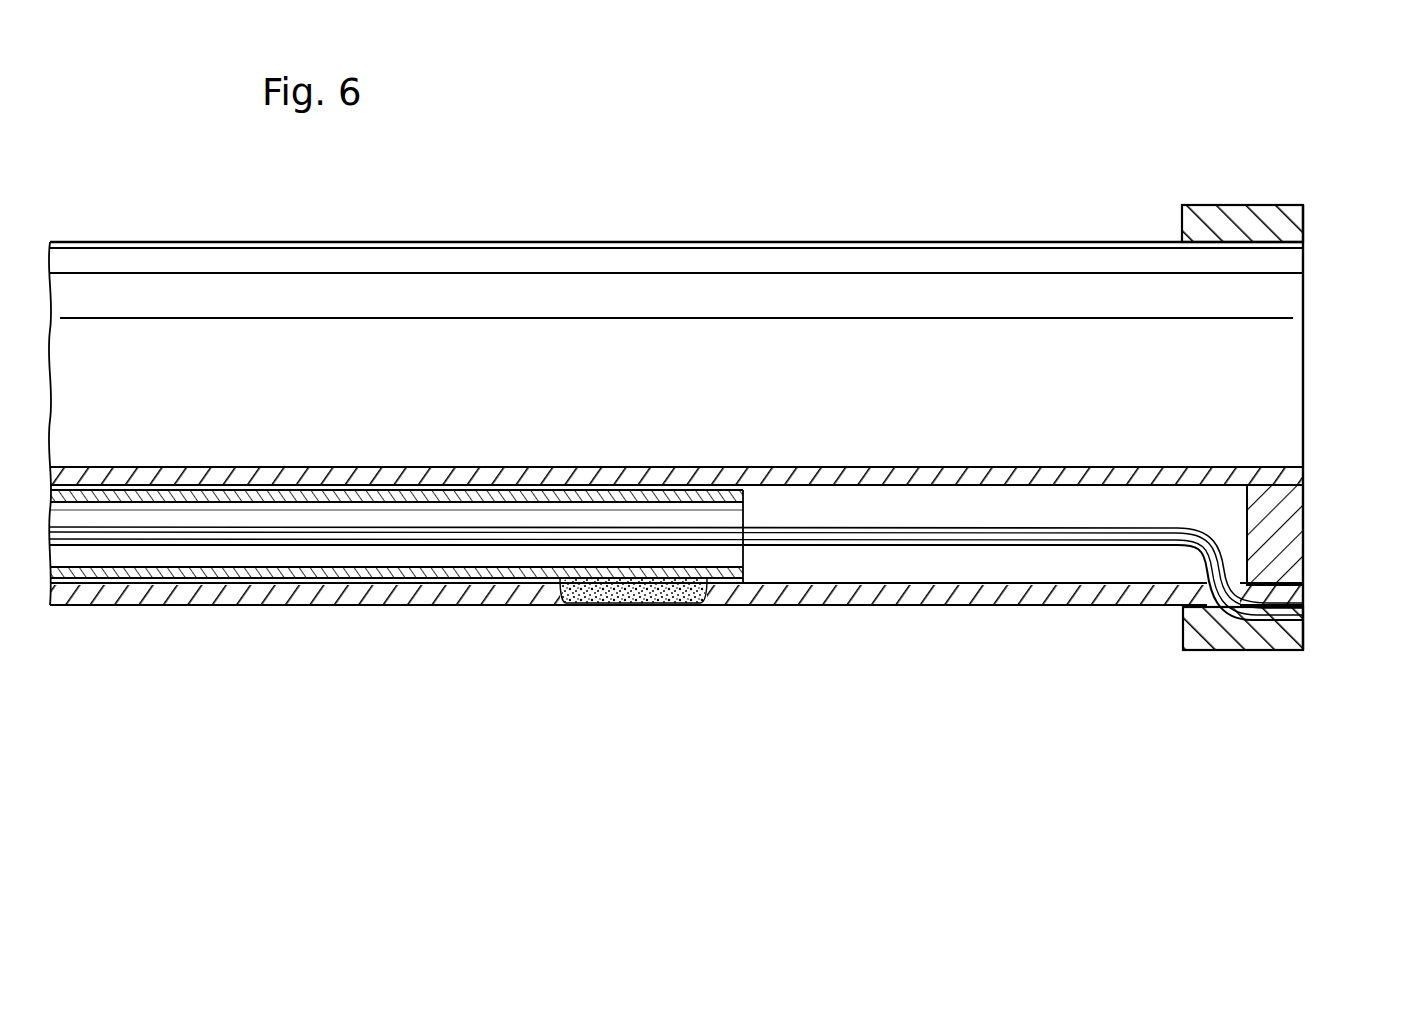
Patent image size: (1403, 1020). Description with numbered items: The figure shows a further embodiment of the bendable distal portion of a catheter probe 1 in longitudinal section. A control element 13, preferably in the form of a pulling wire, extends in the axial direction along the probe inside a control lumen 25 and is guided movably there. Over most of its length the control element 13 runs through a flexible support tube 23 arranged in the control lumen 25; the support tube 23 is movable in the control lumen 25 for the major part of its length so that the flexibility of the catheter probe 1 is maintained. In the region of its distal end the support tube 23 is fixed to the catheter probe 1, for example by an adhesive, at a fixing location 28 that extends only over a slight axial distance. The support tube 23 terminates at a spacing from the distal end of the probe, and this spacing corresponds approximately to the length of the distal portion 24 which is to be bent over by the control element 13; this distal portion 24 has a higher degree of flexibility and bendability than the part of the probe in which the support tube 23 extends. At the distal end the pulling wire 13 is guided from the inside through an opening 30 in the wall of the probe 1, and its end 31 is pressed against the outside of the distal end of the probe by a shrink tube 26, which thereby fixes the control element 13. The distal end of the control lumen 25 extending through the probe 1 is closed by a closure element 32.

The catheter probe 1 is at (694, 241).
The control element 13 is at (870, 544).
The support tube 23 is at (487, 579).
The distal portion 24 is at (1307, 690).
The control lumen 25 is at (373, 579).
The shrink tube 26 is at (1257, 208).
The fixing location 28 is at (633, 605).
The opening 30 is at (1175, 607).
The end of the pulling wire 31 is at (1303, 610).
The closure element 32 is at (1297, 535).